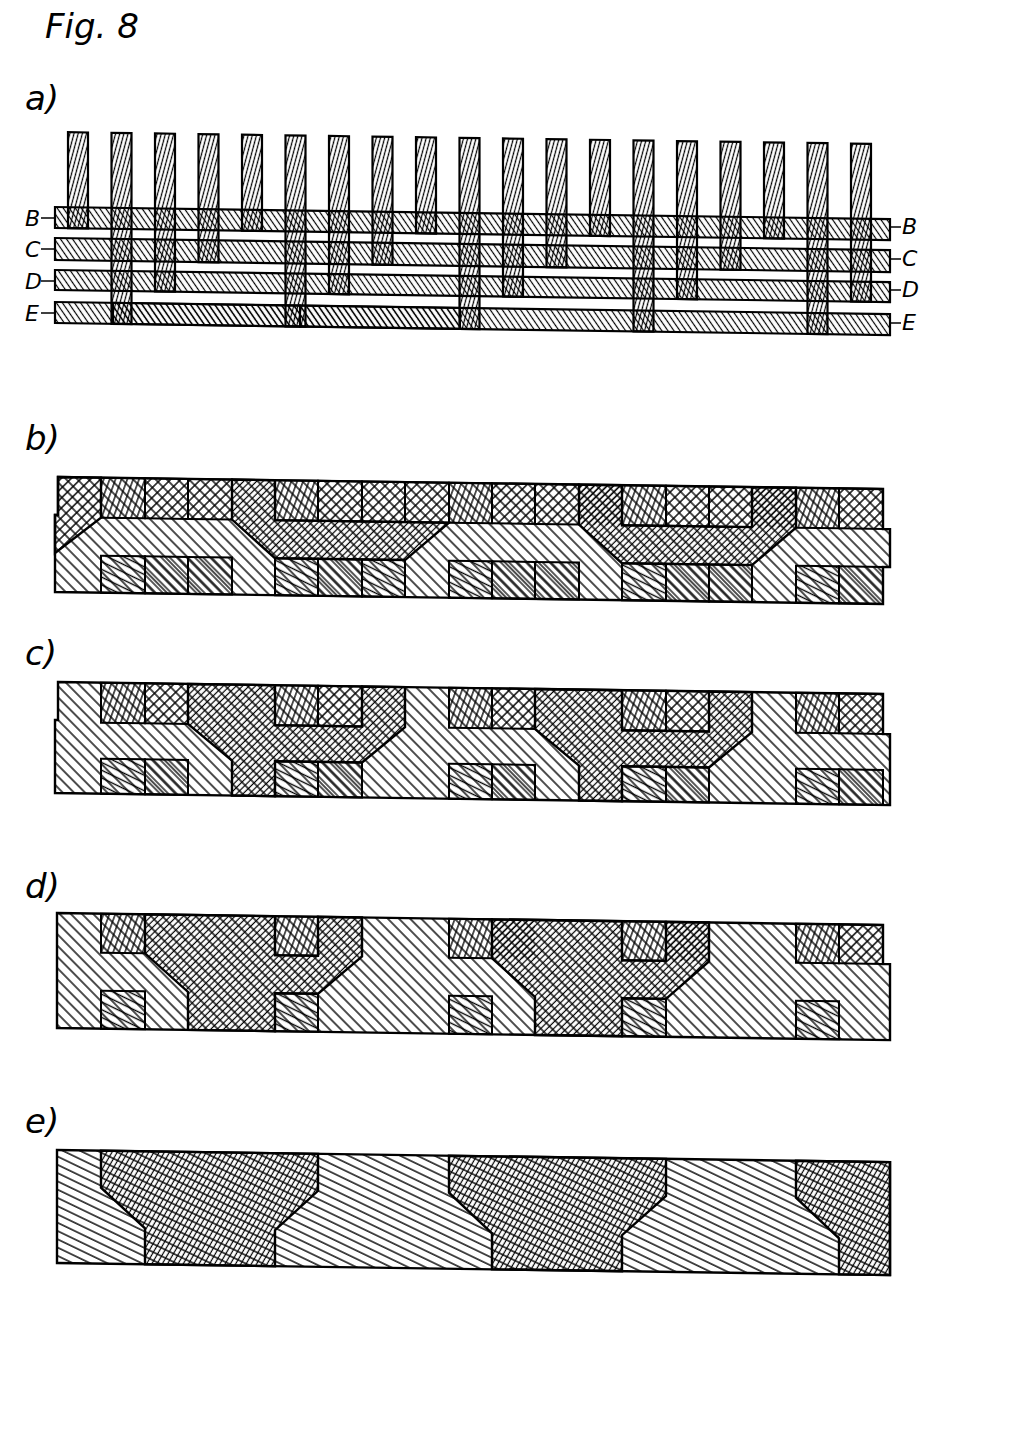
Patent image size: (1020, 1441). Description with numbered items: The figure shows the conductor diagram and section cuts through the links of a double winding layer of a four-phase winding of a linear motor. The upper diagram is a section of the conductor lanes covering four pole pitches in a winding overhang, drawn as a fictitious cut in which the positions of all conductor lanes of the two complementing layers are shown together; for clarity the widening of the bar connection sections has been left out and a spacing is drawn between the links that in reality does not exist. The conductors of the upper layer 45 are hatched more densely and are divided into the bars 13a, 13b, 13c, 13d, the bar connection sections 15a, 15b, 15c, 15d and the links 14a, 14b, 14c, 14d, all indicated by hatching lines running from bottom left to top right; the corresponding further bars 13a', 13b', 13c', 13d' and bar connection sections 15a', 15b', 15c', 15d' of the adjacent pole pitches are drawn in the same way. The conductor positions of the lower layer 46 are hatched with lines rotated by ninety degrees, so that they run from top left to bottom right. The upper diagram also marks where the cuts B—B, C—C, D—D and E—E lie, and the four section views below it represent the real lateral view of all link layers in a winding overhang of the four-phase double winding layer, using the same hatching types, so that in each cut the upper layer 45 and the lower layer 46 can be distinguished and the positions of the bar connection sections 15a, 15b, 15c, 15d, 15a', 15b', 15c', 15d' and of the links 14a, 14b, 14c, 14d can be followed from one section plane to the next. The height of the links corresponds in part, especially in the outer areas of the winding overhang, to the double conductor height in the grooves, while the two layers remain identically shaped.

The bar 13a is at (482, 213).
The bar 13b is at (528, 183).
The bar 13c is at (566, 182).
The bar 13d is at (616, 153).
The lead conductor 13a' is at (657, 214).
The lead conductor 13b' is at (692, 184).
The lead conductor 13c' is at (743, 183).
The lead conductor 13d' is at (792, 153).
The link 14a is at (752, 218).
The link 14b is at (708, 257).
The link 14c is at (660, 286).
The link 14d is at (615, 322).
The bar connection section 15a is at (477, 697).
The bar connection section 15b is at (523, 684).
The bar connection section 15c is at (562, 480).
The bar connection section 15d is at (612, 468).
The through conductor 15a' is at (652, 698).
The through conductor 15b' is at (702, 687).
The through conductor 15c' is at (736, 482).
The through conductor 15d' is at (784, 470).
The upper layer 45 is at (217, 324).
The lower layer 46 is at (383, 322).